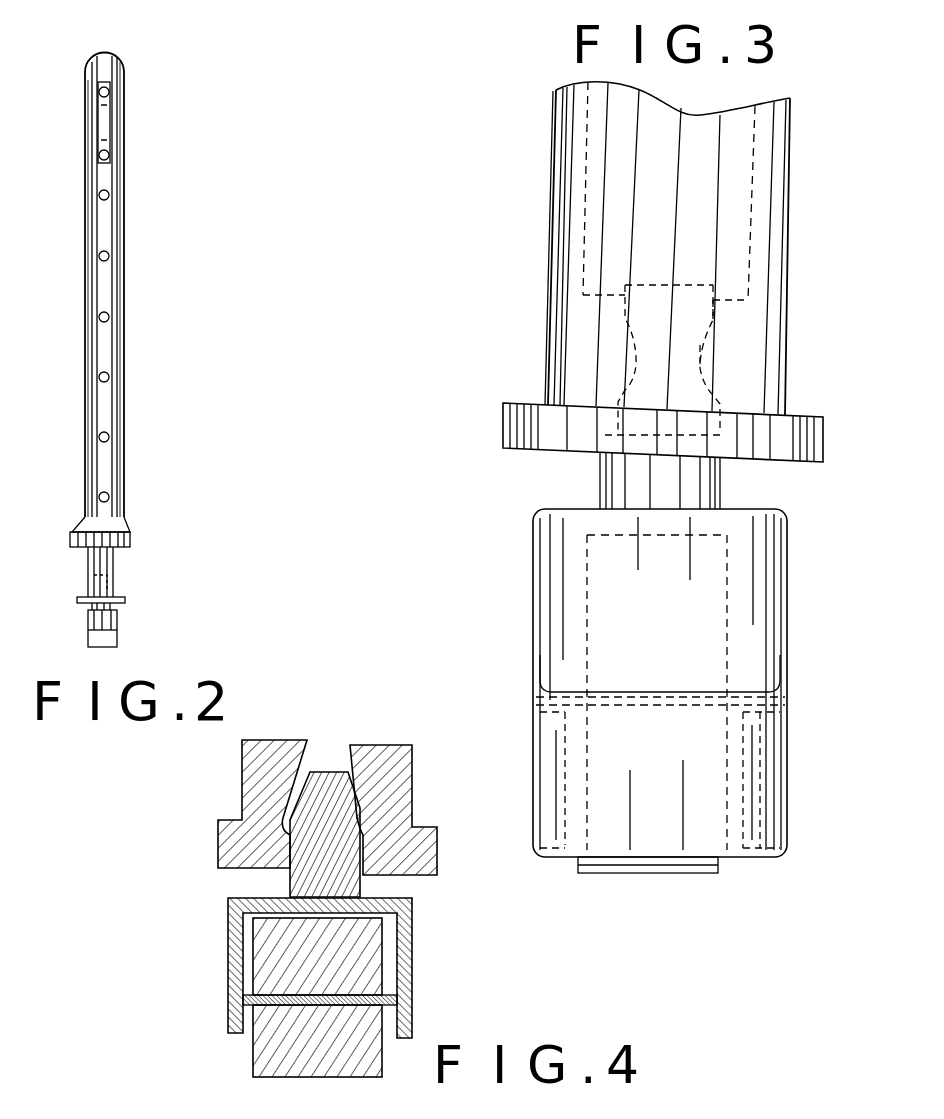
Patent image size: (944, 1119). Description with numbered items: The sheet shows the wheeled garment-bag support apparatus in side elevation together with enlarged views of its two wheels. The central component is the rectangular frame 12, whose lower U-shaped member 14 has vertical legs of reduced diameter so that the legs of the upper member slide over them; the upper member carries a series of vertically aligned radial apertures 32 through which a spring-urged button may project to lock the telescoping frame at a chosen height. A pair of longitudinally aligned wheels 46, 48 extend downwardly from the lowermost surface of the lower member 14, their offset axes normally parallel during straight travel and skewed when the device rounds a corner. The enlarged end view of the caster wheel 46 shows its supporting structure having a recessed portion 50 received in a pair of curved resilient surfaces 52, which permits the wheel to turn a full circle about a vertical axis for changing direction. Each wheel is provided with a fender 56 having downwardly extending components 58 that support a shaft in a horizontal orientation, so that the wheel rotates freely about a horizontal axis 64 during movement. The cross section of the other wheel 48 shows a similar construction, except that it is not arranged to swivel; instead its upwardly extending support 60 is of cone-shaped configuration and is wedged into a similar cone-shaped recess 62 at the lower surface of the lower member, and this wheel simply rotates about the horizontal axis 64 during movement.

In FIG. 2, the frame 12 is at (122, 357).
In FIG. 2, the radial apertures 32 is at (110, 255).
In FIG. 3, the lower U-shaped member 14 is at (765, 302).
In FIG. 3, the resilient surfaces 52 is at (718, 323).
In FIG. 3, the recessed portion 50 is at (702, 365).
In FIG. 3, the fender 56 is at (783, 632).
In FIG. 3, the horizontal axis 64 is at (742, 690).
In FIG. 4, the horizontal axis 64 is at (355, 1000).
In FIG. 3, the downwardly extending components 58 is at (780, 796).
In FIG. 3, the wheel 46 is at (690, 873).
In FIG. 4, the upwardly extending support 60 is at (355, 790).
In FIG. 4, the cone-shaped recess 62 is at (365, 816).
In FIG. 4, the wheel 48 is at (352, 1078).